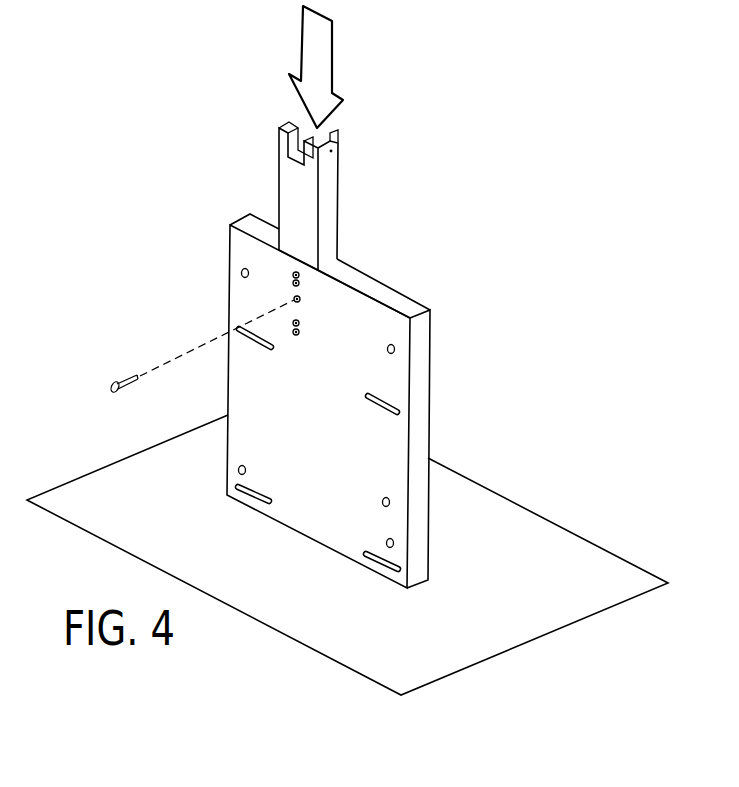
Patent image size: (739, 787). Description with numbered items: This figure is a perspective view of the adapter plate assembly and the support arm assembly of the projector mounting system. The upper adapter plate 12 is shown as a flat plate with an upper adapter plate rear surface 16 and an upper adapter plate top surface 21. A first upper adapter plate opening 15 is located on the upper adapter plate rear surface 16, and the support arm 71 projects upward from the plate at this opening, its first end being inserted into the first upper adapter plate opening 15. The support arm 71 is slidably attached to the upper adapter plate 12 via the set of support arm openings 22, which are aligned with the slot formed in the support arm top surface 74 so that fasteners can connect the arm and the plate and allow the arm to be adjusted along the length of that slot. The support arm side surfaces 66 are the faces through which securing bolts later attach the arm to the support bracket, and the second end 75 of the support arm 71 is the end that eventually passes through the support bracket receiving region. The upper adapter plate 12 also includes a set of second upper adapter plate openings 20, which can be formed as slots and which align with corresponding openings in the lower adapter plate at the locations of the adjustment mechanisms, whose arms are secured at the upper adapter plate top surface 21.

The upper adapter plate 12 is at (322, 525).
The first upper adapter plate opening 15 is at (362, 273).
The upper adapter plate rear surface 16 is at (388, 294).
The second upper adapter plate openings 20 is at (395, 349).
The upper adapter plate top surface 21 is at (390, 502).
The support arm openings 22 is at (302, 285).
The support arm side surfaces 66 is at (330, 151).
The support arm 71 is at (329, 188).
The support arm top surface 74 is at (292, 188).
The second end 75 is at (279, 134).